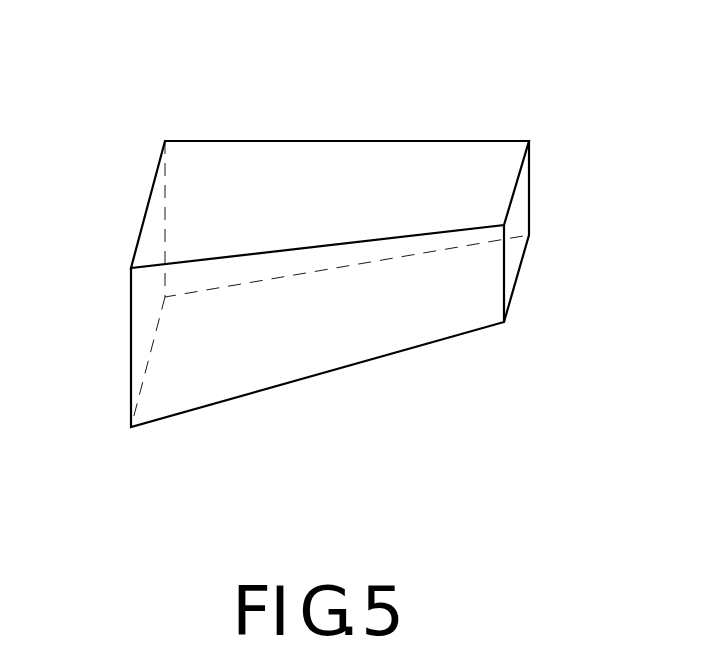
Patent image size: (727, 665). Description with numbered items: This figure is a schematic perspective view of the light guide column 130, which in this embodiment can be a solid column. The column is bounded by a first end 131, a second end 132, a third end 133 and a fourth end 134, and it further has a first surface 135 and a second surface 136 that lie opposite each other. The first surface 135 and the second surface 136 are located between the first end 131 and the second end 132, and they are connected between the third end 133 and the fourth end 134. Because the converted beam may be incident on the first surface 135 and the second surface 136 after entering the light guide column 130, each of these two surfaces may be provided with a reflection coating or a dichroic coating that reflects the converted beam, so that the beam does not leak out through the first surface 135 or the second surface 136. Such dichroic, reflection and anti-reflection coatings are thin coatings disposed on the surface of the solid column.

The light guide column 130 is at (93, 36).
The first end 131 is at (150, 295).
The second end 132 is at (519, 207).
The third end 133 is at (350, 318).
The fourth end 134 is at (363, 193).
The first surface 135 is at (244, 187).
The second surface 136 is at (243, 358).